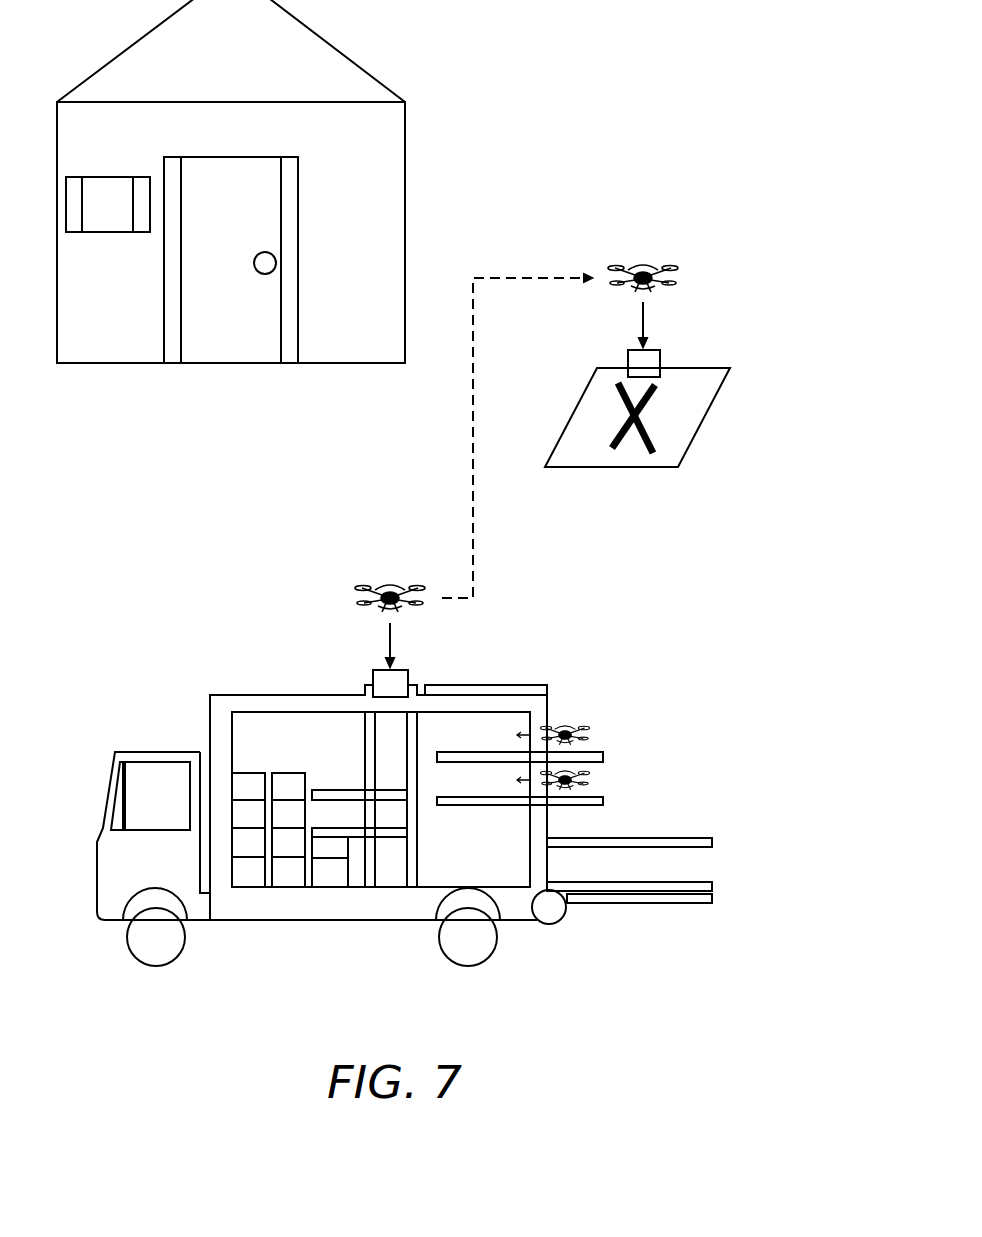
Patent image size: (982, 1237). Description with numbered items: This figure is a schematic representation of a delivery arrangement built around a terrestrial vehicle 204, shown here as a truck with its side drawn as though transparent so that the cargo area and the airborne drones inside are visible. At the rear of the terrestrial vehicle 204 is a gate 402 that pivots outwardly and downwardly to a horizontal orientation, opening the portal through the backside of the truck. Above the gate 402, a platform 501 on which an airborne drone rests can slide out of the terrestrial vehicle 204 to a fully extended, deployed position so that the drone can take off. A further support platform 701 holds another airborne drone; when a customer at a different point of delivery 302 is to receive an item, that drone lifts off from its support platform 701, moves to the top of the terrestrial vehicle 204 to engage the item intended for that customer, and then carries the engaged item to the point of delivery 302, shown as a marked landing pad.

The point of delivery 302 is at (647, 433).
The terrestrial vehicle 204 is at (332, 908).
The support platform 701 is at (660, 837).
The platform 501 is at (675, 880).
The gate 402 is at (675, 903).